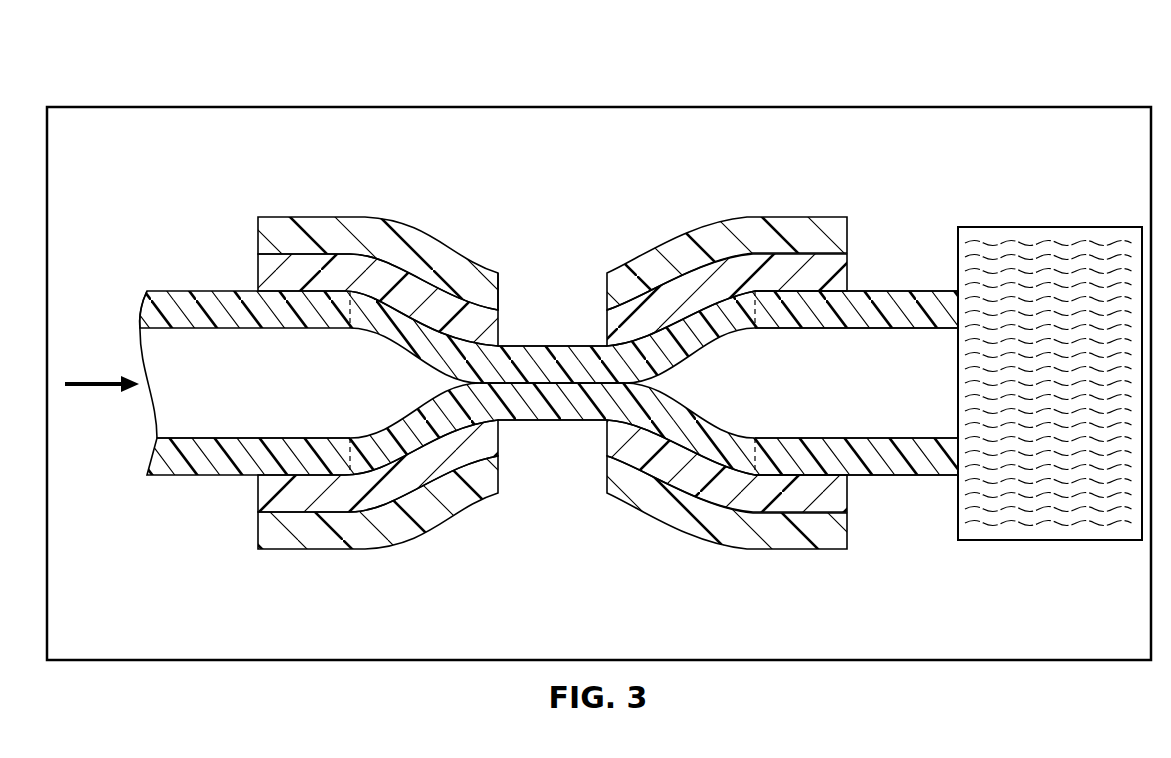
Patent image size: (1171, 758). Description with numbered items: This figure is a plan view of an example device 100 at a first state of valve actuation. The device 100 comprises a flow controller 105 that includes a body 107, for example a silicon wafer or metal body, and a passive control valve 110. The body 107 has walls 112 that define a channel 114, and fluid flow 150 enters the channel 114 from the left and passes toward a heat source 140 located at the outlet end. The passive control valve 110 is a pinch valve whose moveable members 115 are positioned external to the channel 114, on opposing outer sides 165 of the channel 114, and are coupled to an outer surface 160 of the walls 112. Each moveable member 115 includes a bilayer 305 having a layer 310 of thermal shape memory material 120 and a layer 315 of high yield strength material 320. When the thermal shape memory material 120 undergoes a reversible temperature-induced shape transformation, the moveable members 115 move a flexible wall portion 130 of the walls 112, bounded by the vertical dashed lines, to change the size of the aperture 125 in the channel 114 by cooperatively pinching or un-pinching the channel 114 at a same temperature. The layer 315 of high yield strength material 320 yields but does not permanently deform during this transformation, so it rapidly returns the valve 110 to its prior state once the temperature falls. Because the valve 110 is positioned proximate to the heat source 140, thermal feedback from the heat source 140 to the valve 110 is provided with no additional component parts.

The device 100 is at (288, 70).
The flow controller 105 is at (937, 104).
The body 107 is at (582, 618).
The passive control valve 110 is at (214, 181).
The walls 112 is at (795, 329).
The channel 114 is at (871, 396).
The moveable member 115 is at (351, 209).
The thermal shape memory material 120 is at (499, 327).
The aperture 125 is at (423, 383).
The flexible wall portion 130 is at (573, 345).
The heat source 140 is at (1050, 541).
The fluid flow 150 is at (100, 388).
The outer surface 160 is at (228, 477).
The opposing outer sides 165 is at (213, 437).
The bilayer 305 is at (188, 220).
The layer of thermal shape memory material 310 is at (251, 255).
The layer of high yield strength material 315 is at (251, 220).
The high yield strength material 320 is at (499, 283).